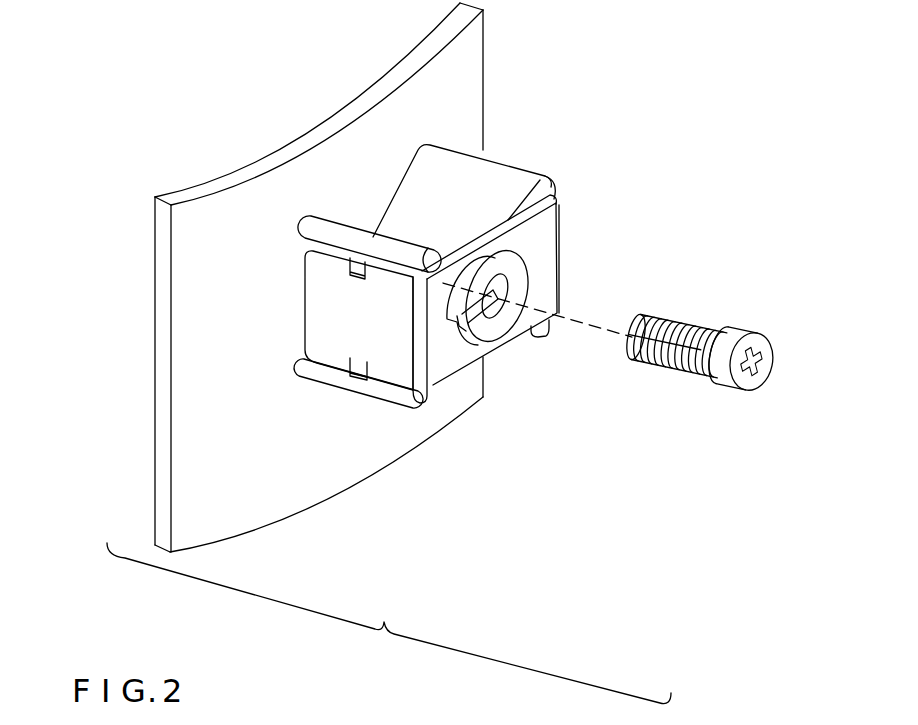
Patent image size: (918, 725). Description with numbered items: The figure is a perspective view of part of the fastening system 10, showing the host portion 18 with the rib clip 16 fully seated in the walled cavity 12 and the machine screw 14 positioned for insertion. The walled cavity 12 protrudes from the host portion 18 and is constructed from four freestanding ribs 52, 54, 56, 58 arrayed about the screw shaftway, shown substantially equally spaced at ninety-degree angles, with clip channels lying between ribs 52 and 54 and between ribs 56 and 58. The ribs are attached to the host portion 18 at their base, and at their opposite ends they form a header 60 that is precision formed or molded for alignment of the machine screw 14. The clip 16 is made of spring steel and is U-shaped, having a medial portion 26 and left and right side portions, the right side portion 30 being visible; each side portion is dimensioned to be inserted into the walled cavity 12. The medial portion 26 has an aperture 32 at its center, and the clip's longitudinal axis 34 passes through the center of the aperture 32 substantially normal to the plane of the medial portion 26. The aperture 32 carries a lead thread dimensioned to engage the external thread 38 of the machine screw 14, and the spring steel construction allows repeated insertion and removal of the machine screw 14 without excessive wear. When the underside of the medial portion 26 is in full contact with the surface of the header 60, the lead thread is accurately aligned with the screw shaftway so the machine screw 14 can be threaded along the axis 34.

The fastening system 10 is at (389, 623).
The walled cavity 12 is at (319, 277).
The machine screw 14 is at (700, 376).
The rib clip 16 is at (424, 283).
The host portion 18 is at (232, 510).
The medial portion 26 is at (453, 360).
The right side portion 30 is at (320, 330).
The aperture 32 is at (523, 262).
The longitudinal axis 34 is at (597, 321).
The external thread 38 is at (703, 330).
The rib 52 is at (507, 162).
The rib 54 is at (333, 230).
The rib 56 is at (360, 402).
The rib 58 is at (543, 338).
The header 60 is at (543, 188).